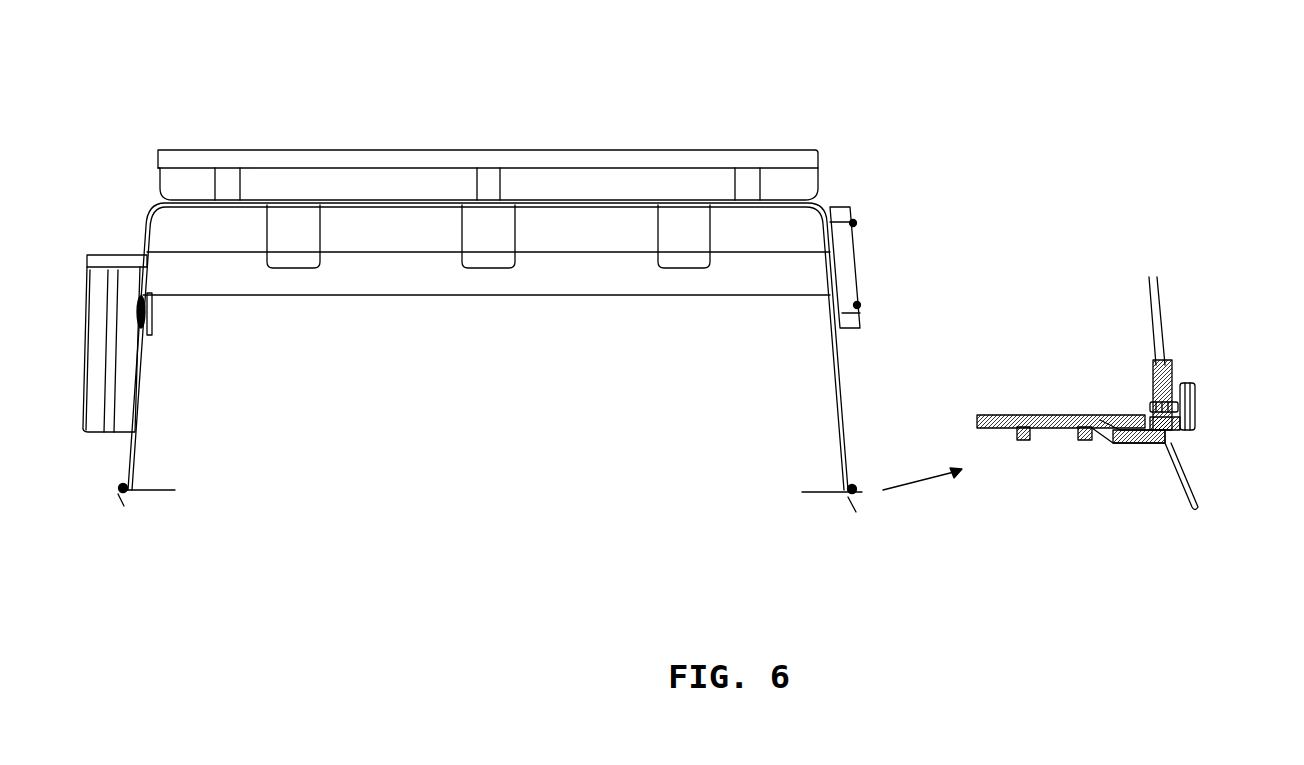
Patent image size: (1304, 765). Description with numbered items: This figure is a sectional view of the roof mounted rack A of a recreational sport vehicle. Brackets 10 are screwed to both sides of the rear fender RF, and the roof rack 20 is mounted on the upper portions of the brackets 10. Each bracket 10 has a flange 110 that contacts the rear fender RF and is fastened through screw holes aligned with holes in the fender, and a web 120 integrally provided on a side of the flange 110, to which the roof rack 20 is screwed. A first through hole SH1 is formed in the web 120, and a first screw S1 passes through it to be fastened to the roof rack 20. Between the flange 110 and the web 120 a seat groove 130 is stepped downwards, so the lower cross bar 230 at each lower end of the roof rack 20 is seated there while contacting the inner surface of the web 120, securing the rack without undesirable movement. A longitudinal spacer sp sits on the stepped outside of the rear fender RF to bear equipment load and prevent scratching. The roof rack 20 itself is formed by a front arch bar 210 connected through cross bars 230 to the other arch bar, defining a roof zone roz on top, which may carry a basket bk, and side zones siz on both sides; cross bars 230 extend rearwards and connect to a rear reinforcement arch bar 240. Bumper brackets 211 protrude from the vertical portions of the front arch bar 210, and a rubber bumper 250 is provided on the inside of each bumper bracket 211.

The roof mounted rack A is at (141, 136).
The roof rack 20 is at (138, 204).
The basket bk is at (638, 139).
The roof zone roz is at (382, 200).
The front arch bar 210 is at (548, 200).
The rubber bumper 250 is at (90, 273).
The longitudinal spacer sp is at (135, 308).
The bumper bracket 211 is at (133, 323).
The side zone siz is at (126, 357).
The rear reinforcement arch bar 240 is at (805, 276).
The bracket 10 is at (110, 505).
The cross bar 230 is at (1150, 380).
The flange 110 is at (1050, 428).
The seat groove 130 is at (1117, 443).
The web 120 is at (1183, 378).
The first through hole SH1 is at (1185, 388).
The first screw S1 is at (1190, 396).
The rear fender RF is at (1180, 487).